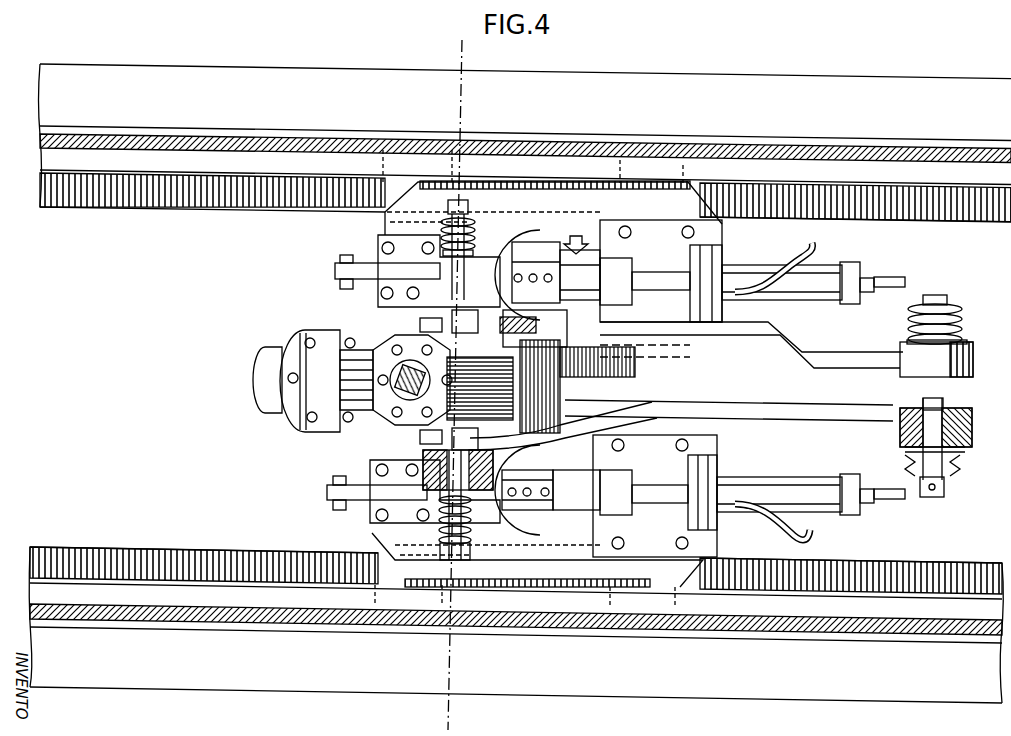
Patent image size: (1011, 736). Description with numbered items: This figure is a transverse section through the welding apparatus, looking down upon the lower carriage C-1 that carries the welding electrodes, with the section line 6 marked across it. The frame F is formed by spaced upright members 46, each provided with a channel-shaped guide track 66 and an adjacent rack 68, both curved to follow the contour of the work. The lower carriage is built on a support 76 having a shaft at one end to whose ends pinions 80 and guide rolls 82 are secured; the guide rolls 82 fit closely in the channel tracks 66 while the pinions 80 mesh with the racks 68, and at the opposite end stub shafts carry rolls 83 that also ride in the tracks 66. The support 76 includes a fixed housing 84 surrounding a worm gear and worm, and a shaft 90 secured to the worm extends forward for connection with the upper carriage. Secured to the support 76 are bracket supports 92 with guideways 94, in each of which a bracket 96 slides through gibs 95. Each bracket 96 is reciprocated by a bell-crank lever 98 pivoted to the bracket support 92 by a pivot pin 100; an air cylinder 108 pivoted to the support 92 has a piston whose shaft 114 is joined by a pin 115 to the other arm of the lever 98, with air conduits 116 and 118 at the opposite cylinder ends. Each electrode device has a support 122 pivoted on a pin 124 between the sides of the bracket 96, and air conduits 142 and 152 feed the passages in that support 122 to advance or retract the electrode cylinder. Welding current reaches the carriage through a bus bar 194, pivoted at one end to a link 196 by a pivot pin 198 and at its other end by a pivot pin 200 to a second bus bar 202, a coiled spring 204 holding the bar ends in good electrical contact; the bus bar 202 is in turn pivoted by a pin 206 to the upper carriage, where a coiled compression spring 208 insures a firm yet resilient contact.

The frame F is at (146, 72).
The upright members 46 is at (40, 141).
The racks 68 is at (268, 200).
The channel-shaped guide tracks 66 is at (305, 172).
The support 76 is at (380, 236).
The pin 206 is at (378, 237).
The pinions 80 is at (380, 195).
The guide rolls 82 is at (393, 150).
The rolls 83 is at (698, 165).
The pin 124 is at (556, 188).
The link 196 is at (472, 246).
The pivot pin 198 is at (492, 268).
The air conduit 152 is at (534, 268).
The air conduit 142 is at (579, 237).
The gibs 95 is at (586, 246).
The guideways 94 is at (601, 258).
The pivot pin 100 is at (622, 224).
The bell-crank lever 98 is at (680, 236).
The bracket supports 92 is at (706, 243).
The air conduit 116 is at (812, 250).
The air cylinder 108 is at (838, 266).
The air conduit 118 is at (895, 283).
The lower carriage C-1 is at (312, 297).
The shaft 90 is at (410, 365).
The housing 84 is at (259, 372).
The bus bar 194 is at (805, 353).
The pin 115 is at (676, 336).
The second bus bar 202 is at (778, 385).
The pivot pin 200 is at (944, 405).
The coiled spring 204 is at (965, 463).
The coiled compression spring 208 is at (437, 537).
The support 122 is at (522, 530).
The bracket 96 is at (561, 549).
The shaft 114 is at (641, 522).
The section line 6 is at (444, 385).